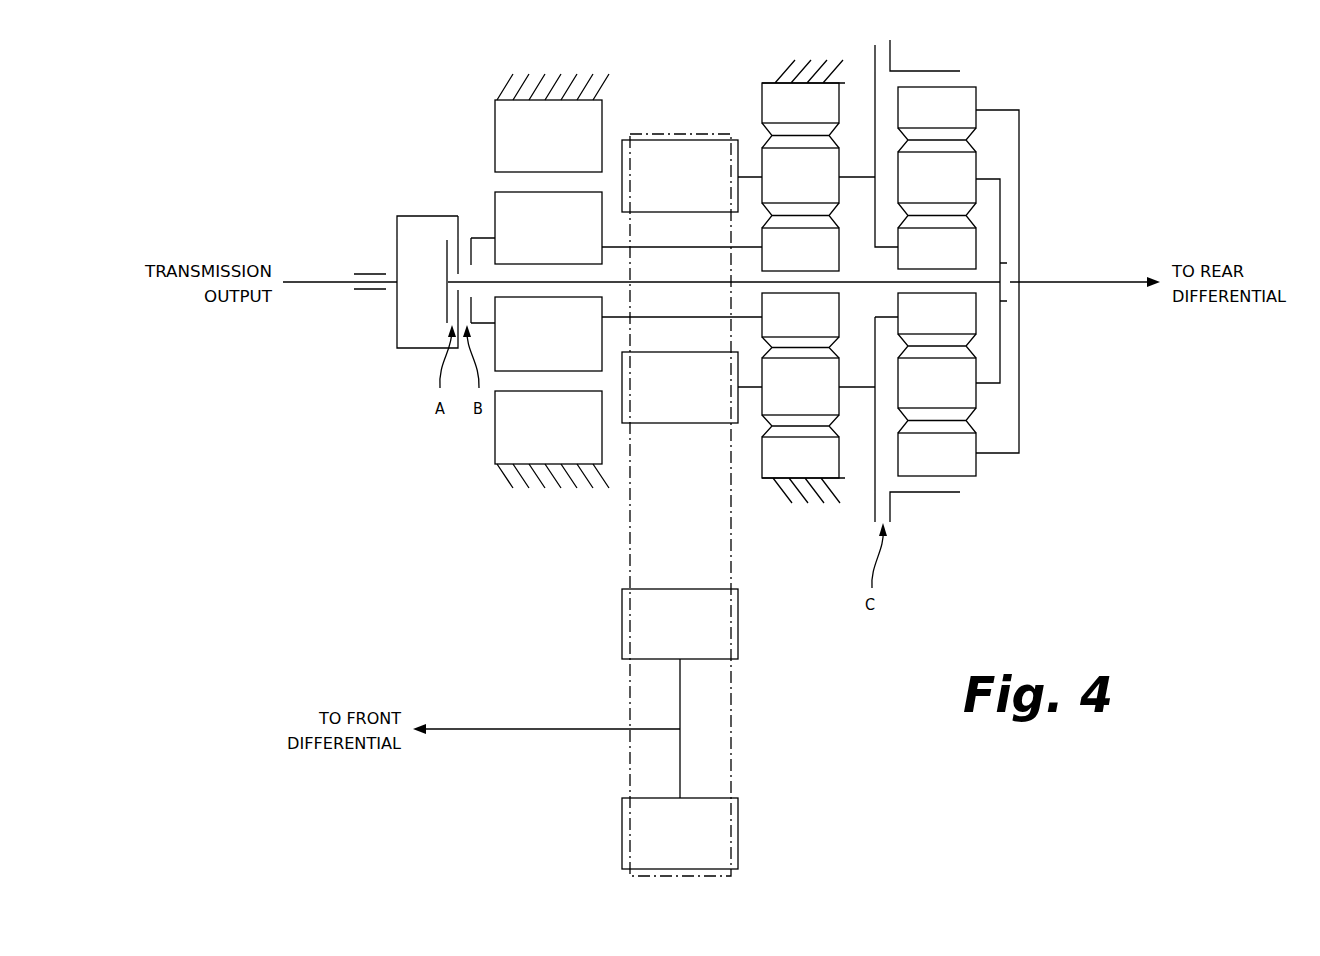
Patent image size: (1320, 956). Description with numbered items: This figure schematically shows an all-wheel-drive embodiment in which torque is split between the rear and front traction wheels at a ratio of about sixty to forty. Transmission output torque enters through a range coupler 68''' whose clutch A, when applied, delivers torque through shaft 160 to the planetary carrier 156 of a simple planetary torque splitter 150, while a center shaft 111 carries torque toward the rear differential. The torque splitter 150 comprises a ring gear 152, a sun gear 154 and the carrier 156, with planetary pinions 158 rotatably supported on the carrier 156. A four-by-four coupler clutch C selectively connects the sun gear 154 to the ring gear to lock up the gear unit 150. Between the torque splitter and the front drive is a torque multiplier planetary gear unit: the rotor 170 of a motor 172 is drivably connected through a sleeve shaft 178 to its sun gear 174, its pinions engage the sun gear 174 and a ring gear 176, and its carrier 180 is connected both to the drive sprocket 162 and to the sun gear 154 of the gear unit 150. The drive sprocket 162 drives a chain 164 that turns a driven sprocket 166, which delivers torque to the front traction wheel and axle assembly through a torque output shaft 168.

The range coupler 68''' is at (415, 282).
The center shaft 111 is at (892, 282).
The simple planetary torque splitter 150 is at (931, 293).
The ring gear 152 is at (967, 100).
The sun gear 154 is at (965, 250).
The planetary carrier 156 is at (988, 386).
The planetary pinions 158 is at (966, 390).
The shaft 160 is at (653, 283).
The drive sprocket 162 is at (660, 148).
The chain 164 is at (732, 573).
The driven sprocket 166 is at (740, 815).
The torque output shaft 168 is at (460, 727).
The rotor 170 is at (498, 200).
The motor 172 is at (498, 110).
The sun gear 174 is at (772, 256).
The ring gear 176 is at (776, 93).
The sleeve shaft 178 is at (697, 245).
The carrier 180 is at (857, 390).